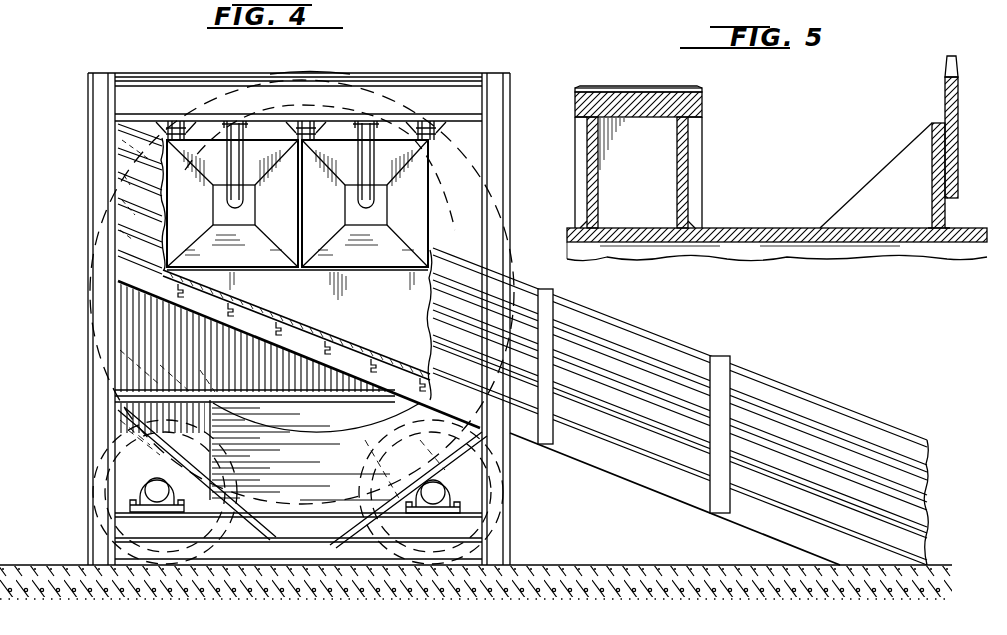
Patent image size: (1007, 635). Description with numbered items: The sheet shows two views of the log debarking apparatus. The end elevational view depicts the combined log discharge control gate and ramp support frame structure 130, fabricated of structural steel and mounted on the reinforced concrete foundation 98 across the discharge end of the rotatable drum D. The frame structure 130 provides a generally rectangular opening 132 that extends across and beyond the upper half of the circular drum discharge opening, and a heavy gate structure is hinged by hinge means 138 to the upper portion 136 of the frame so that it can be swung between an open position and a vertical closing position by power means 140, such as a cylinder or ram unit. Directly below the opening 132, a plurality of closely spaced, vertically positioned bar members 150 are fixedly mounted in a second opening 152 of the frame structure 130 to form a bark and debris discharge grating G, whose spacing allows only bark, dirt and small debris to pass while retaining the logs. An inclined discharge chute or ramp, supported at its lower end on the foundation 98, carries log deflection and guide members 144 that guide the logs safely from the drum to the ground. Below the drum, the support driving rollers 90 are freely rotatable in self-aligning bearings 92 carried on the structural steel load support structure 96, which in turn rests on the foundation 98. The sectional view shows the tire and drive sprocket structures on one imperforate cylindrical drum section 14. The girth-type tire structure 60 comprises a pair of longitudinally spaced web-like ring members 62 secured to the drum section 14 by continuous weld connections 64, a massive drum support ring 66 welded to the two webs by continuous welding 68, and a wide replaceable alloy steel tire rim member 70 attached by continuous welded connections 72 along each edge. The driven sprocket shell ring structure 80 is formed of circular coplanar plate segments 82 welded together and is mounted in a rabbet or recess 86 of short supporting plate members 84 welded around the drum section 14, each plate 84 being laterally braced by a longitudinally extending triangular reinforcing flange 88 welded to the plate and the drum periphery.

In FIG. 5, the imperforate cylindrical drum section 14 is at (760, 228).
In FIG. 5, the tire structure 60 is at (620, 76).
In FIG. 4, the web-like ring member 62 is at (499, 196).
In FIG. 5, the web-like ring member 62 is at (598, 192).
In FIG. 5, the continuous weld connection 64 is at (584, 226).
In FIG. 5, the drum support ring 66 is at (702, 100).
In FIG. 5, the continuous welding 68 is at (580, 120).
In FIG. 4, the tire rim member 70 is at (312, 74).
In FIG. 5, the tire rim member 70 is at (664, 90).
In FIG. 5, the continuous welded connection 72 is at (580, 88).
In FIG. 5, the driven sprocket shell ring structure 80 is at (930, 116).
In FIG. 5, the circular coplanar plate segment 82 is at (958, 140).
In FIG. 5, the supporting plate member 84 is at (930, 228).
In FIG. 5, the rabbet or recess 86 is at (932, 196).
In FIG. 5, the triangular reinforcing flange 88 is at (905, 160).
In FIG. 4, the support driving roller 90 is at (253, 499).
In FIG. 4, the self-aligning bearing 92 is at (156, 484).
In FIG. 4, the load support structure 96 is at (398, 534).
In FIG. 4, the foundation 98 is at (540, 574).
In FIG. 4, the frame support structure 130 is at (84, 386).
In FIG. 4, the rectangular opening 132 is at (470, 142).
In FIG. 4, the upper portion of the frame 136 is at (428, 96).
In FIG. 4, the hinge means 138 is at (186, 124).
In FIG. 4, the power means 140 is at (243, 192).
In FIG. 4, the log deflection and guide member 144 is at (645, 338).
In FIG. 4, the bar member 150 is at (331, 388).
In FIG. 4, the second opening 152 is at (113, 386).
In FIG. 4, the bark and debris discharge grating G is at (126, 334).
In FIG. 5, the drum D is at (793, 220).